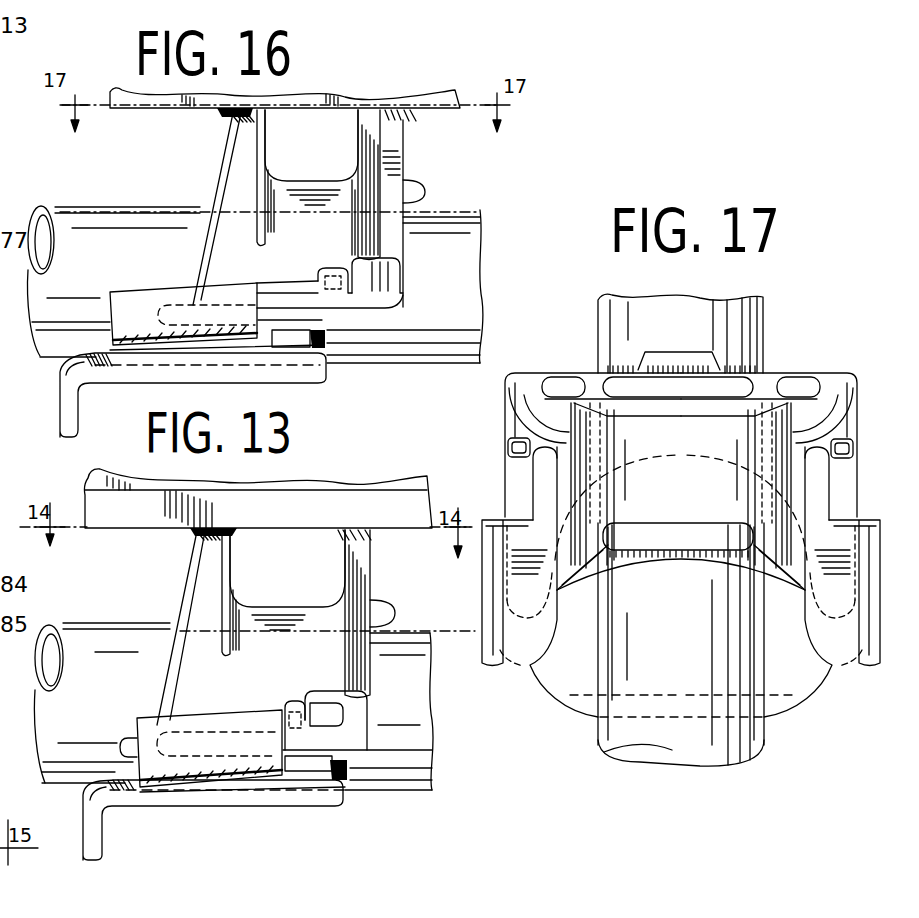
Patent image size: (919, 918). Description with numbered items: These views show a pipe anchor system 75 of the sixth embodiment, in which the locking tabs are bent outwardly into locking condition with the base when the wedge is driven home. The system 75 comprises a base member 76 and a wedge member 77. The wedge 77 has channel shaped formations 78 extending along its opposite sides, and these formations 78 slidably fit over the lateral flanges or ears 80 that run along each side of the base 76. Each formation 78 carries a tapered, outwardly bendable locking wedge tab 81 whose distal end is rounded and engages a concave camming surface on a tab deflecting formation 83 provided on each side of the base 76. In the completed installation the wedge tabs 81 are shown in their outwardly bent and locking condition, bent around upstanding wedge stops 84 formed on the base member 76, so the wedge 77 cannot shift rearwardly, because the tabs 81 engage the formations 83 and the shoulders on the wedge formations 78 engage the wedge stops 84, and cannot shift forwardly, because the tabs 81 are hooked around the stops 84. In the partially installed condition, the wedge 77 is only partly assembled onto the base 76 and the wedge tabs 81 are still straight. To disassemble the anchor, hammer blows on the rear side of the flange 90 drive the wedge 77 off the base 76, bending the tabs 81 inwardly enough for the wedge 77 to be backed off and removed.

In FIG. 16, the pipe anchor system 75 is at (181, 187).
In FIG. 13, the base member 76 is at (382, 579).
In FIG. 16, the wedge member 77 is at (145, 290).
In FIG. 13, the wedge member 77 is at (193, 710).
In FIG. 13, the channel shaped formations 78 is at (216, 707).
In FIG. 13, the lateral flanges or ears 80 is at (127, 738).
In FIG. 16, the locking wedge tab 81 is at (276, 281).
In FIG. 13, the locking wedge tab 81 is at (345, 714).
In FIG. 17, the locking wedge tab 81 is at (540, 468).
In FIG. 16, the tab deflecting formation 83 is at (397, 272).
In FIG. 16, the wedge stops 84 is at (329, 266).
In FIG. 13, the wedge stops 84 is at (297, 701).
In FIG. 17, the wedge stops 84 is at (508, 446).
In FIG. 16, the flange 90 is at (80, 416).
In FIG. 13, the flange 90 is at (105, 838).